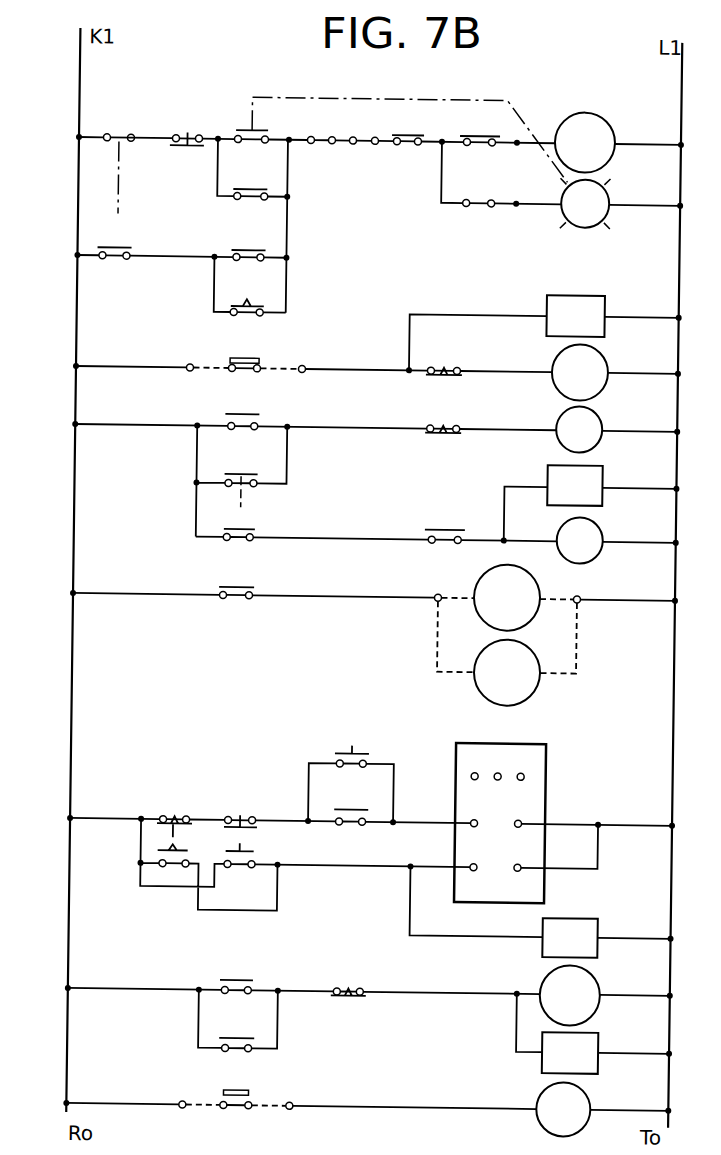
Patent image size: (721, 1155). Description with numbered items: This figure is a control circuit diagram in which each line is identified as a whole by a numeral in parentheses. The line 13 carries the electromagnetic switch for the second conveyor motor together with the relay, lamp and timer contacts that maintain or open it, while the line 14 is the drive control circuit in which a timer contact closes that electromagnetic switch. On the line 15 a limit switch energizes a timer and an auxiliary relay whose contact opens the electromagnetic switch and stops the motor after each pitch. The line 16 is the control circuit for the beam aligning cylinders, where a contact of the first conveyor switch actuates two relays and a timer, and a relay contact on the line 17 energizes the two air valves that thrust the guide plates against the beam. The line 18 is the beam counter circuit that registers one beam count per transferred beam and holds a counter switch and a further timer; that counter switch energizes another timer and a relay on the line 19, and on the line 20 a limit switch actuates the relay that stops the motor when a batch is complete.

The line 13 is at (354, 194).
The line 14 is at (156, 269).
The line 15 is at (352, 345).
The line 16 is at (350, 476).
The line 17 is at (348, 633).
The line 18 is at (345, 834).
The line 19 is at (344, 1014).
The line 20 is at (342, 1101).